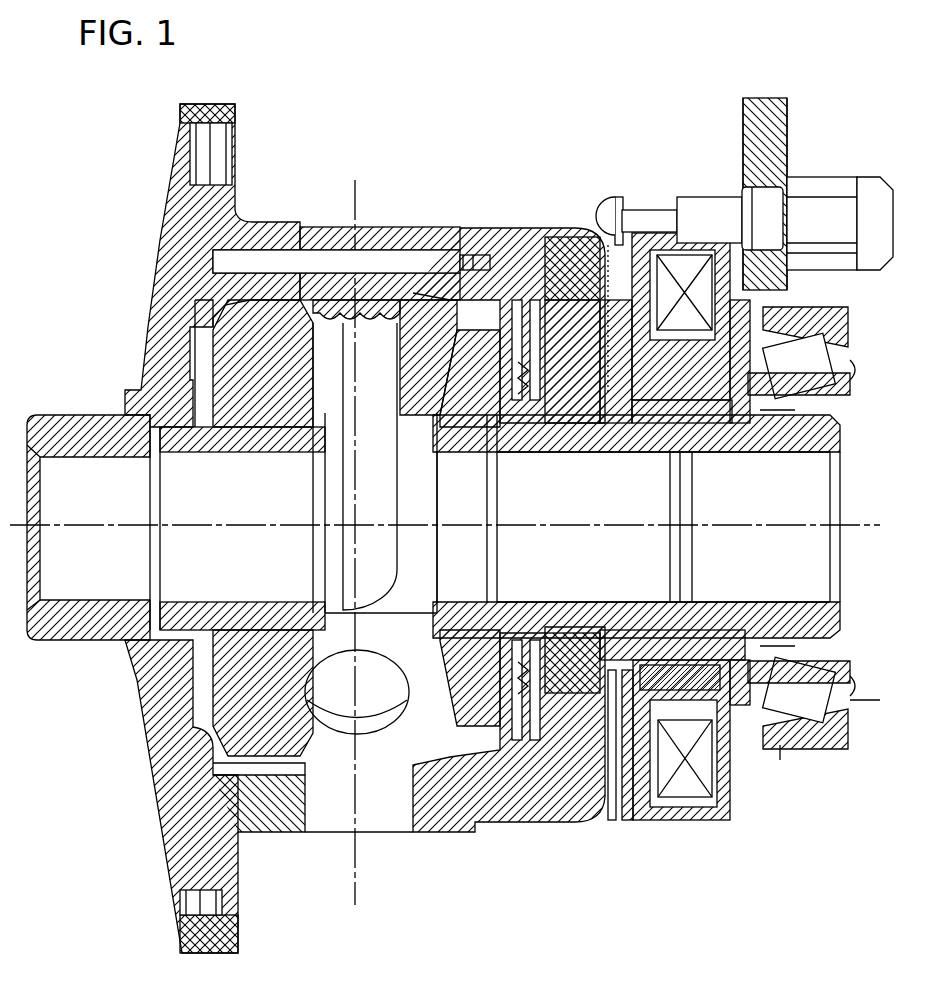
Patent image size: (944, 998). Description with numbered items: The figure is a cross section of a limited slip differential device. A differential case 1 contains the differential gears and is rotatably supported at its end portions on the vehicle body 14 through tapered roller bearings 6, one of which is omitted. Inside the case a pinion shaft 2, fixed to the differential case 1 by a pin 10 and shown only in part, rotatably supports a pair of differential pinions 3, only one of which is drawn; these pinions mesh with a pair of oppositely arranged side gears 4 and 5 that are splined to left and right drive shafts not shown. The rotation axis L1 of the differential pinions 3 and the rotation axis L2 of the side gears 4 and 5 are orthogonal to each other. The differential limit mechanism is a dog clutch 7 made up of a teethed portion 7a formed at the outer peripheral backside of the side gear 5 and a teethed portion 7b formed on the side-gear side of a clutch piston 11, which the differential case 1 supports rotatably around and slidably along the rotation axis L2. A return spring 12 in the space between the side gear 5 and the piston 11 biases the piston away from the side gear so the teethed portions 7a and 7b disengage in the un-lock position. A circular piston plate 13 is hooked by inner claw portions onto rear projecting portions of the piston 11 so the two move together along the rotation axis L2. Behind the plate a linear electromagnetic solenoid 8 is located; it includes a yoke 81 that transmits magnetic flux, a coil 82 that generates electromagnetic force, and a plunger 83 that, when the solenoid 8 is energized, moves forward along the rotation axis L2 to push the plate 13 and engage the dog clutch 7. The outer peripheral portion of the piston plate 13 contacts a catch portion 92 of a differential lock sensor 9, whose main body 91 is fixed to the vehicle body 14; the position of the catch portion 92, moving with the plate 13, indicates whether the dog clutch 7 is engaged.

The differential case 1 is at (262, 224).
The pinion shaft 2 is at (365, 484).
The differential pinion 3 is at (413, 382).
The side gear 4 is at (252, 682).
The side gear 5 is at (462, 682).
The tapered roller bearing 6 is at (800, 350).
The dog clutch 7 is at (510, 415).
The teethed portion 7a is at (518, 303).
The teethed portion 7b is at (535, 303).
The linear electromagnetic solenoid 8 is at (712, 781).
The yoke 81 is at (722, 790).
The coil 82 is at (683, 790).
The plunger 83 is at (698, 680).
The differential lock sensor 9 is at (818, 175).
The main body 91 is at (760, 208).
The catch portion 92 is at (608, 226).
The pin 10 is at (378, 258).
The clutch piston 11 is at (587, 318).
The return spring 12 is at (548, 446).
The piston plate 13 is at (630, 215).
The vehicle body 14 is at (787, 118).
The rotation axis L1 is at (355, 182).
The rotation axis L2 is at (860, 522).